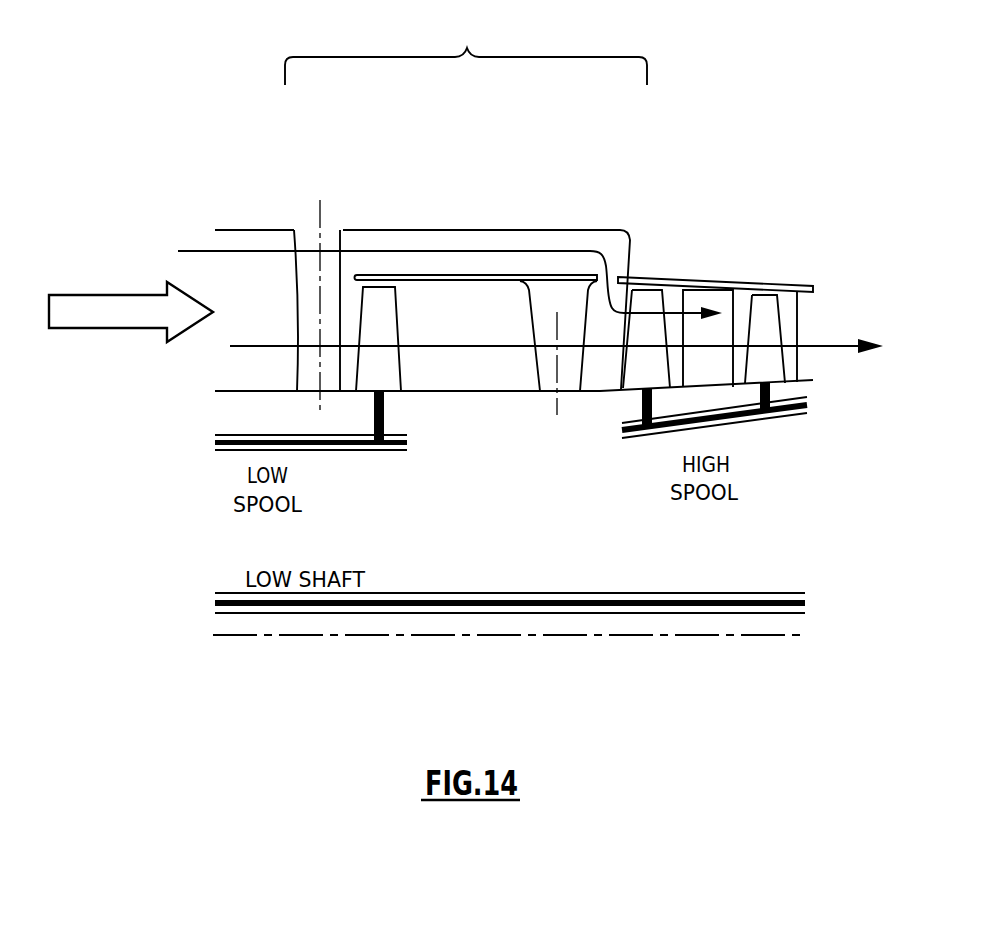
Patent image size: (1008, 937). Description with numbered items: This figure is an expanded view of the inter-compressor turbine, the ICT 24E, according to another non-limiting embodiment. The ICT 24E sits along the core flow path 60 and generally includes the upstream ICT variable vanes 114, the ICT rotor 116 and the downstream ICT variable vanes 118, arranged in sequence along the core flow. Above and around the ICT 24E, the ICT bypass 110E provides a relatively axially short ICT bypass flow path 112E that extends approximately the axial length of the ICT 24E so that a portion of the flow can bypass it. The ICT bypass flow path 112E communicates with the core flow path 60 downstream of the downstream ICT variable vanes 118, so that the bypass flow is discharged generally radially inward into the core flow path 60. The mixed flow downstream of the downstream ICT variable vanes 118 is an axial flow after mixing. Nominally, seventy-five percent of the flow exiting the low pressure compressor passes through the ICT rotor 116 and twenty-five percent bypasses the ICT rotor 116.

The ICT 24E is at (466, 54).
The core flow path 60 is at (277, 314).
The ICT bypass 110E is at (727, 183).
The ICT bypass flow path 112E is at (500, 242).
The upstream ICT variable vanes 114 is at (330, 237).
The ICT rotor 116 is at (386, 312).
The downstream ICT variable vanes 118 is at (548, 380).